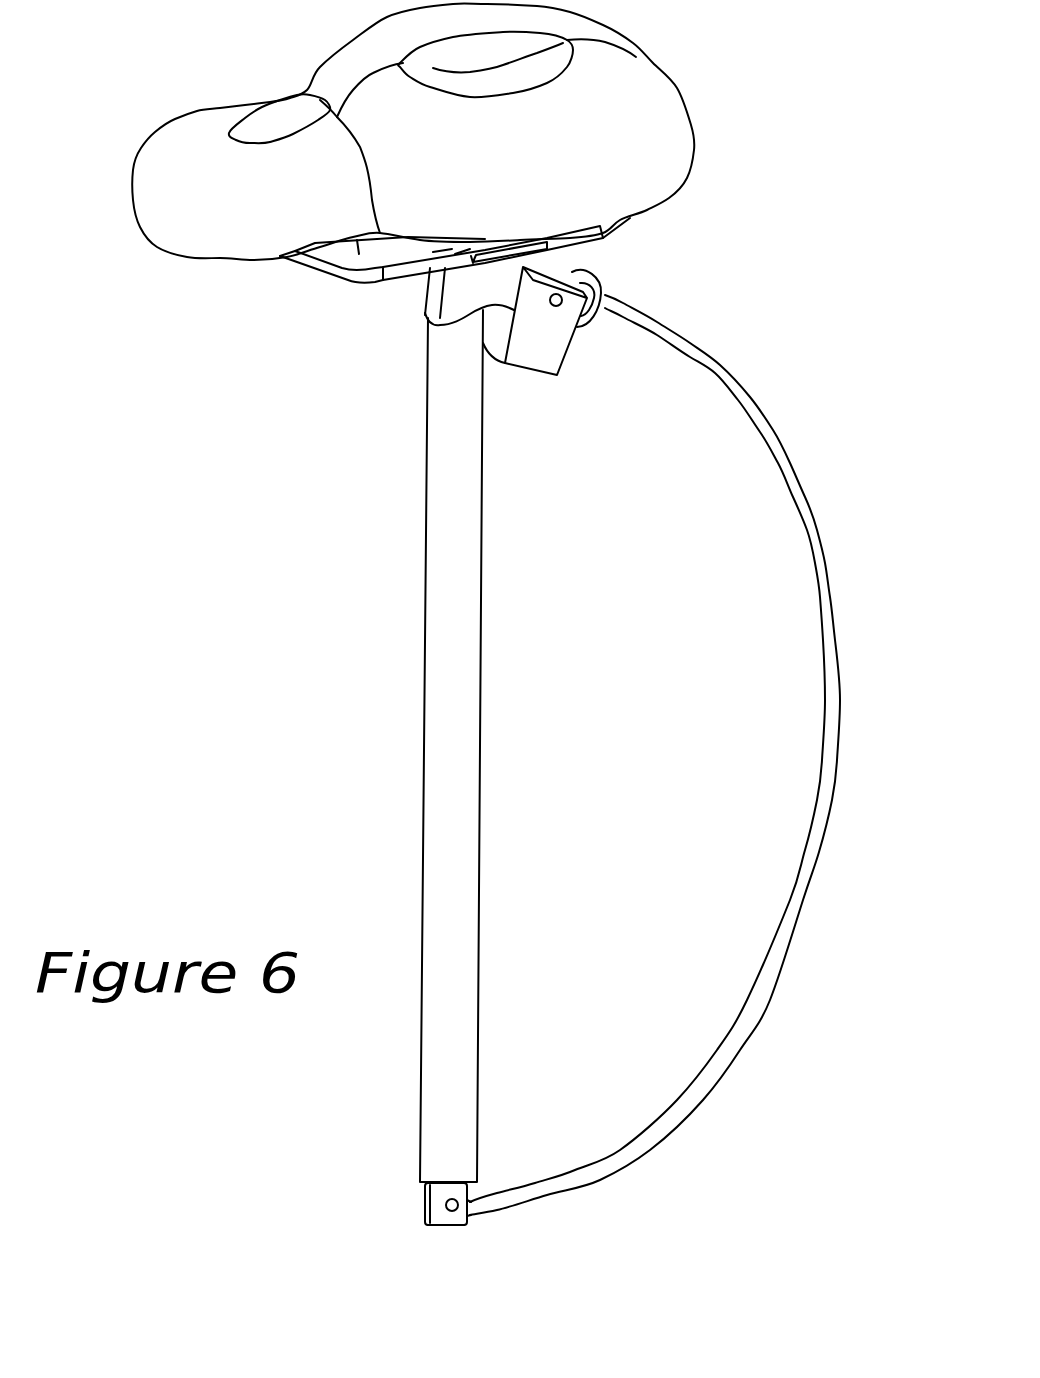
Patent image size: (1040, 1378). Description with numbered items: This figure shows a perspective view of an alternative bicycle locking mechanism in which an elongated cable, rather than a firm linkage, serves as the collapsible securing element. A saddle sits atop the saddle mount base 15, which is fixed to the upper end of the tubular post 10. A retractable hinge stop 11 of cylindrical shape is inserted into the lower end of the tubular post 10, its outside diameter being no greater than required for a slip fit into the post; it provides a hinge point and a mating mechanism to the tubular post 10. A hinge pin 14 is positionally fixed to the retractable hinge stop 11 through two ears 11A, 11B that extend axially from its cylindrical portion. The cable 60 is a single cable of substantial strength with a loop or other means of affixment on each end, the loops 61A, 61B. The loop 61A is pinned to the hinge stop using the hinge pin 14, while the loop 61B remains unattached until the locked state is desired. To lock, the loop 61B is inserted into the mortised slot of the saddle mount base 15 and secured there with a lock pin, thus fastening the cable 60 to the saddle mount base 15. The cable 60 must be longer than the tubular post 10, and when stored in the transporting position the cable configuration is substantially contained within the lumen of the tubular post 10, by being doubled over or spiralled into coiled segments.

The tubular post 10 is at (450, 532).
The retractable hinge stop 11 is at (425, 1197).
The ear 11A is at (445, 1223).
The ear 11B is at (360, 1184).
The hinge pin 14 is at (458, 1206).
The saddle mount base 15 is at (462, 303).
The cable 60 is at (805, 597).
The loop 61A is at (472, 1200).
The loop 61B is at (605, 292).